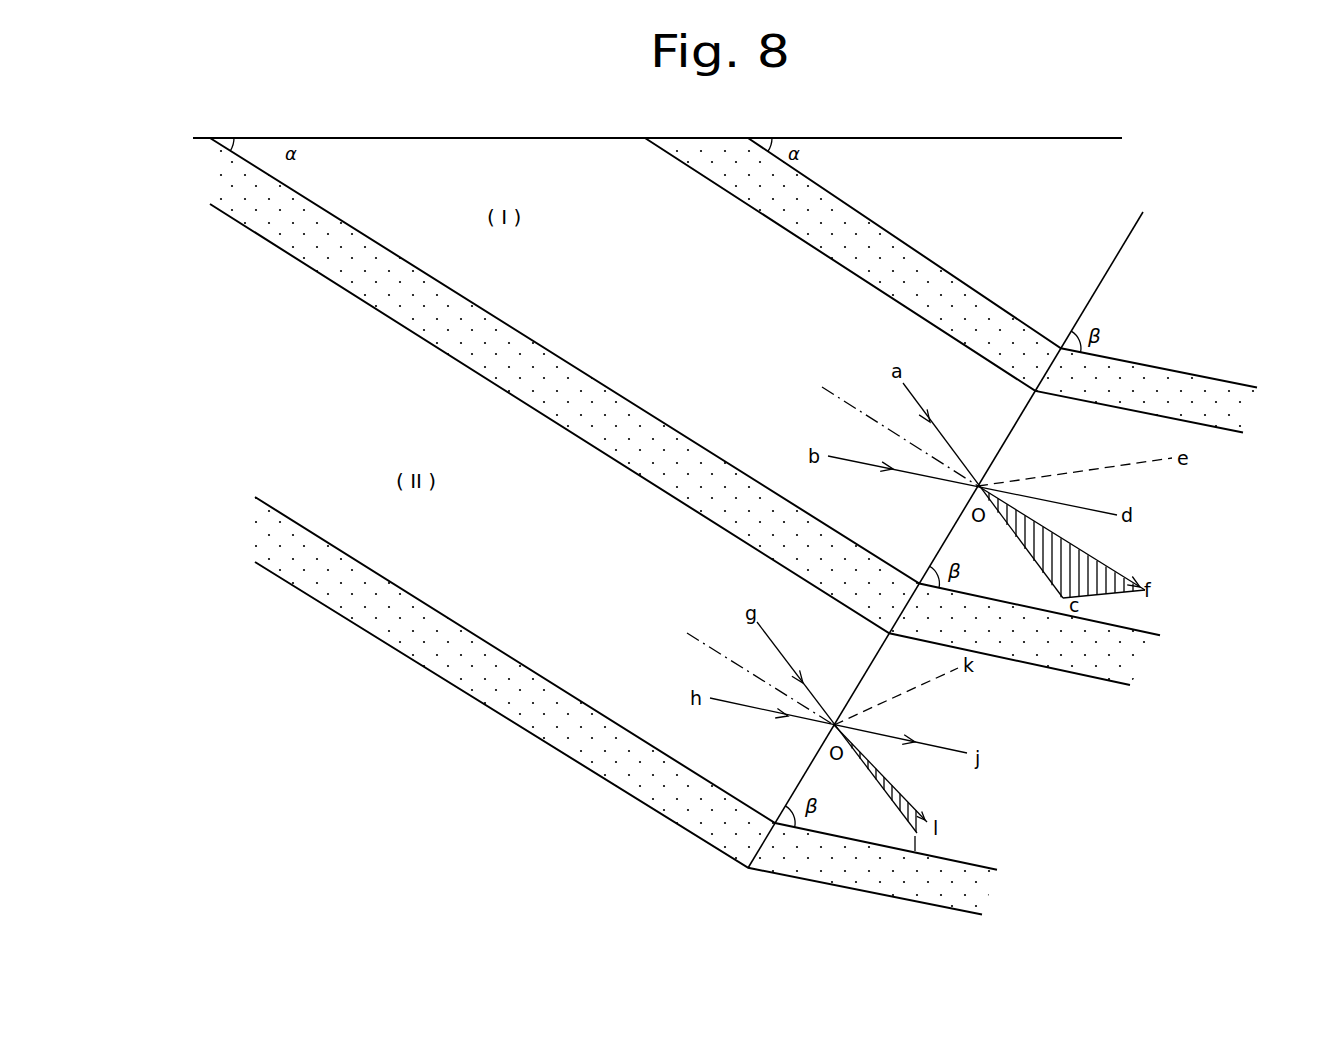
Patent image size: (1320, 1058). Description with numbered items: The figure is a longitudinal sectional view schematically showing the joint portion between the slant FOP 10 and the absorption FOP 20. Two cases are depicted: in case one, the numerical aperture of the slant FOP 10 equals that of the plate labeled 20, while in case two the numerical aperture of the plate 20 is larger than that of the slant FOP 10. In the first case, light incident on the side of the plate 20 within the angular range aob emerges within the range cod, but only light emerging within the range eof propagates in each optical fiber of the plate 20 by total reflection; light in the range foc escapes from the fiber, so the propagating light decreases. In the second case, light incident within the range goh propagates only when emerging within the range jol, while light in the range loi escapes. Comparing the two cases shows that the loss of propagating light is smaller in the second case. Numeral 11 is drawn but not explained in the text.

The slant FOP 10 is at (847, 137).
The inclined layer 11 is at (525, 138).
The absorption FOP 20 is at (1147, 270).